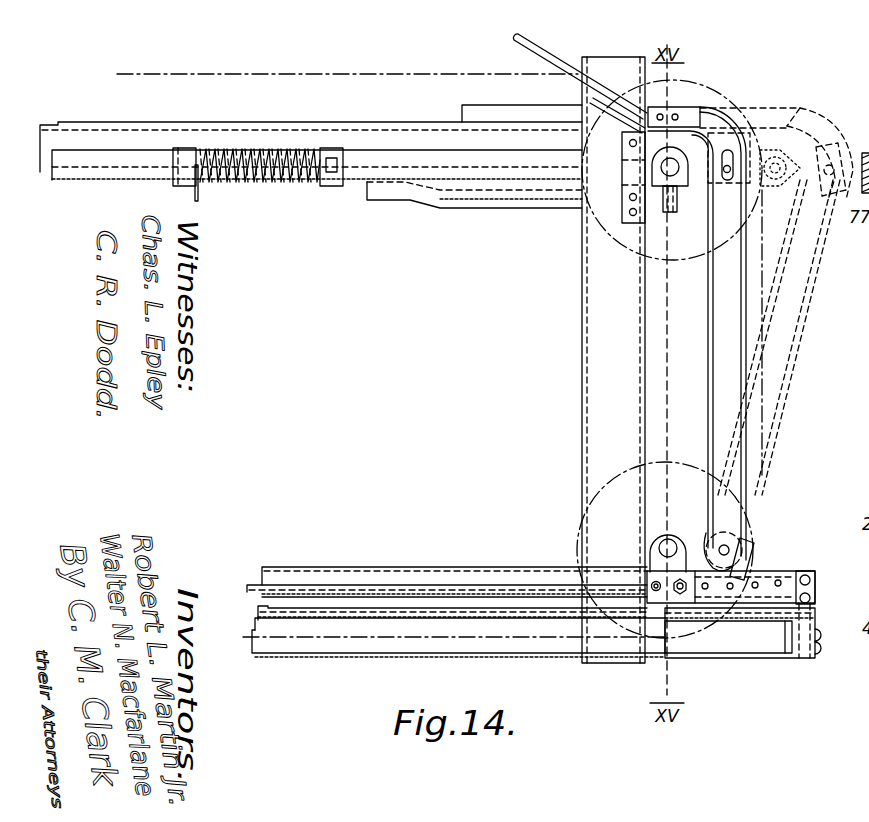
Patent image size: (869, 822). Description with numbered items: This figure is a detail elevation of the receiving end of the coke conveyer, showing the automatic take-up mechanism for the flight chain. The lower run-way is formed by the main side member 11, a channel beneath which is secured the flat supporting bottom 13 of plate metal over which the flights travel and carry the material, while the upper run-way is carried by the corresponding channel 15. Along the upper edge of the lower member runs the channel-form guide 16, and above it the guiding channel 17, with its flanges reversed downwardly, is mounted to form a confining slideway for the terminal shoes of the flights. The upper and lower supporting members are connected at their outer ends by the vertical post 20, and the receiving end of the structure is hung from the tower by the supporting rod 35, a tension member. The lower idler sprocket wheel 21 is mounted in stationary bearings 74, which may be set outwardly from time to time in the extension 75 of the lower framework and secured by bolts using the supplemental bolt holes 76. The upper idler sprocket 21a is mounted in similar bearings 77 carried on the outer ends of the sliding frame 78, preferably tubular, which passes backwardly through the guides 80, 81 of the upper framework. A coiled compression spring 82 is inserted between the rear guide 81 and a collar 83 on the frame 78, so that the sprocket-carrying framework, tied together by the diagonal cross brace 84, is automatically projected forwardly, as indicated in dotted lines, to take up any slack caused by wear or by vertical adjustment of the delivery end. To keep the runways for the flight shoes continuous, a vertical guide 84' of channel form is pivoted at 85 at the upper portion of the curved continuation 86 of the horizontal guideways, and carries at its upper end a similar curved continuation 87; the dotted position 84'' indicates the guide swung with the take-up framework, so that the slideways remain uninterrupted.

The main side member 11 is at (323, 643).
The flat supporting bottom 13 is at (418, 659).
The channel 15 is at (252, 142).
The guide 16 is at (369, 124).
The guiding channel 17 is at (387, 588).
The vertical post 20 is at (592, 353).
The lower idler sprocket wheel 21 is at (758, 568).
The upper idler sprocket 21a is at (703, 88).
The supporting rod 35 is at (528, 44).
The stationary bearing 74 is at (650, 548).
The extension 75 is at (792, 588).
The supplemental bolt hole 76 is at (781, 582).
The bearing 77 is at (670, 213).
The sliding frame 78 is at (470, 177).
The guide 80 is at (633, 163).
The guide 81 is at (181, 165).
The coiled compression spring 82 is at (265, 185).
The collar 83 is at (333, 173).
The diagonal cross brace 84 is at (511, 233).
The vertical guide 84' is at (698, 394).
The link alternate position 84'' is at (787, 319).
The pivot 85 is at (735, 545).
The curved continuation 86 is at (700, 532).
The curved continuation 87 is at (720, 127).